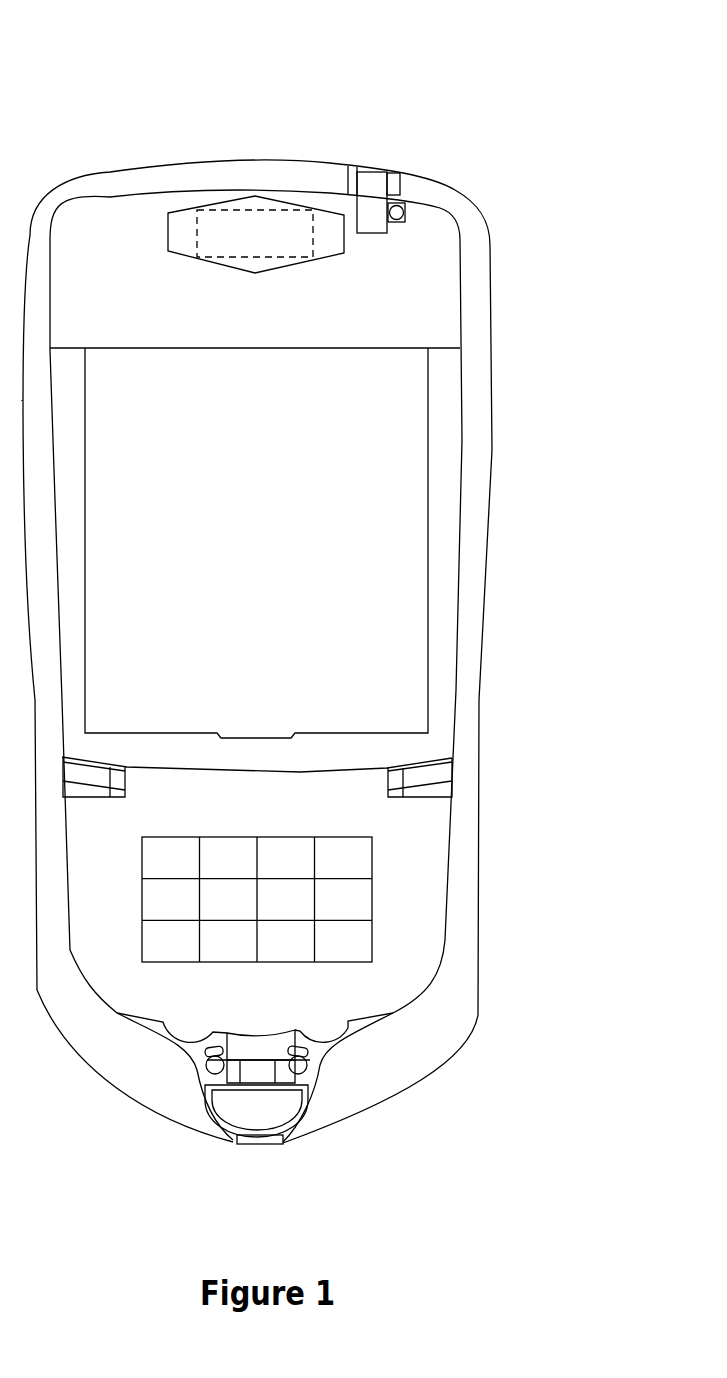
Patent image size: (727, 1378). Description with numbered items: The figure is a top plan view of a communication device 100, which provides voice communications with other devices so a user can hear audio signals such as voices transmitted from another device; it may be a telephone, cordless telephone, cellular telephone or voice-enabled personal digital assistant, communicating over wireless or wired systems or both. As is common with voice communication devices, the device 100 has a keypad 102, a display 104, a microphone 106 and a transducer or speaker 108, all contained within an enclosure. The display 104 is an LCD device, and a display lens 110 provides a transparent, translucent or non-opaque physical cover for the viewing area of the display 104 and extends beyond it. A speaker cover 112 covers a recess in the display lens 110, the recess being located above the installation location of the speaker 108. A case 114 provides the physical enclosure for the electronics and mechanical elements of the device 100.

The communication device 100 is at (257, 579).
The keypad 102 is at (373, 890).
The display 104 is at (400, 487).
The microphone 106 is at (267, 1113).
The speaker 108 is at (267, 210).
The display lens 110 is at (380, 373).
The speaker cover 112 is at (185, 230).
The case 114 is at (493, 652).